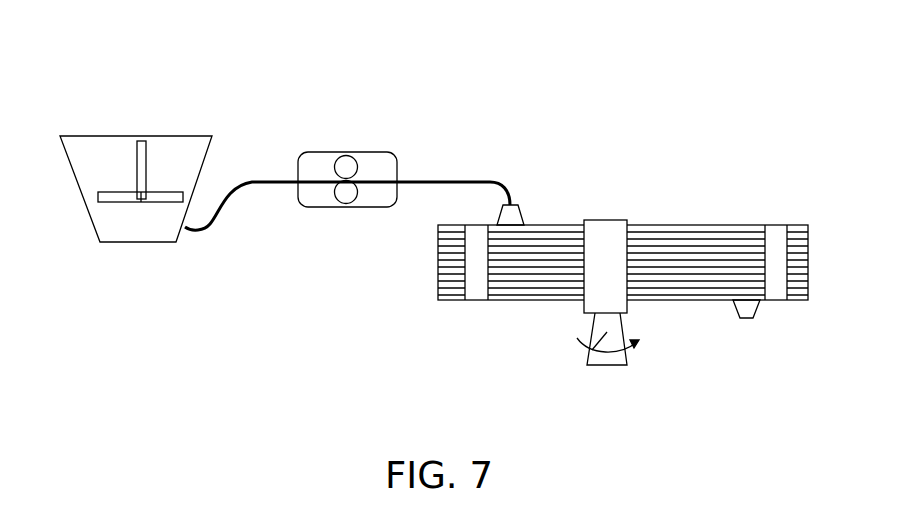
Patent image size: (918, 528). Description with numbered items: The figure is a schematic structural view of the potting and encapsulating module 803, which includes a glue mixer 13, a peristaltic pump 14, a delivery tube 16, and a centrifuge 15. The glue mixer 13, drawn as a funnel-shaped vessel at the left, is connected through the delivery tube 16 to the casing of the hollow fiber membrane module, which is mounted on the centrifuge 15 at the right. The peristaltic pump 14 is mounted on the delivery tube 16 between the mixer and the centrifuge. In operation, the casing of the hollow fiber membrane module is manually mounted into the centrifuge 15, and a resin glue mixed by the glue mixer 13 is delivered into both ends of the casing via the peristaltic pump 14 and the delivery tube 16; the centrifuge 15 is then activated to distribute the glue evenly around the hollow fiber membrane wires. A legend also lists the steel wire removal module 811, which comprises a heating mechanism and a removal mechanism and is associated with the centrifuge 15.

The glue mixer 13 is at (127, 233).
The peristaltic pump 14 is at (302, 208).
The centrifuge 15 is at (577, 343).
The delivery tube 16 is at (430, 182).
The potting and encapsulating module 803 is at (632, 160).
The steel wire removal module 811 is at (805, 115).